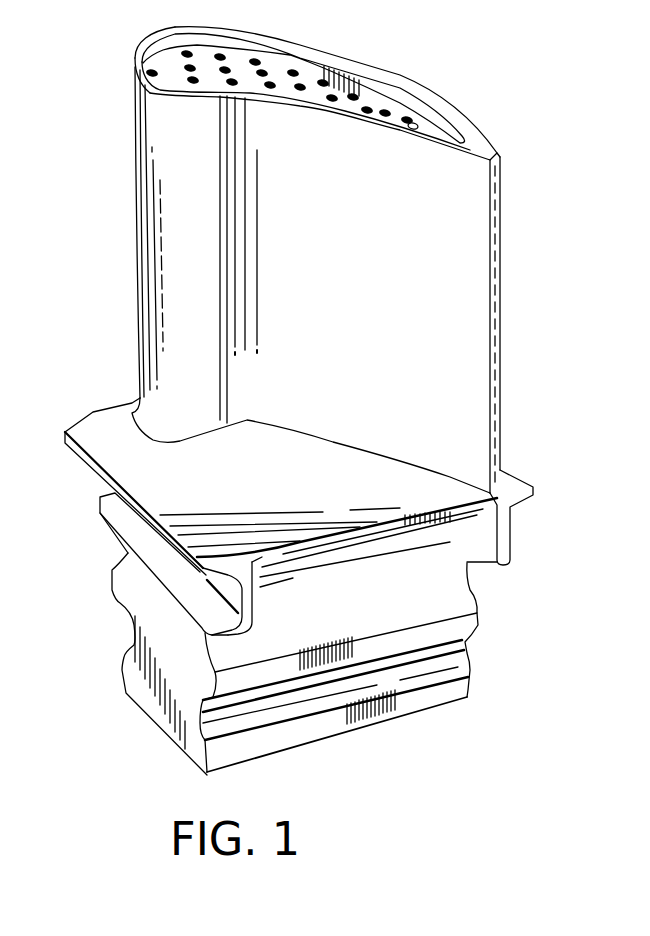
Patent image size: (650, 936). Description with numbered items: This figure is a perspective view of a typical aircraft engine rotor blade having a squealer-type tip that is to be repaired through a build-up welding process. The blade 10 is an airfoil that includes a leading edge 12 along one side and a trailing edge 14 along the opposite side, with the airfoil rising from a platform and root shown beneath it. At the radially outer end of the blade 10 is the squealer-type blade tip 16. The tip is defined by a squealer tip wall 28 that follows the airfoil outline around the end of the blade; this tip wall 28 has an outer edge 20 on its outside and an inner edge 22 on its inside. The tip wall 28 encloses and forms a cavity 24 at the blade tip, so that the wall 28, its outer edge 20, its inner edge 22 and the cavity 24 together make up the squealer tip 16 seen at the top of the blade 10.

The blade 10 is at (142, 342).
The leading edge 12 is at (137, 252).
The trailing edge 14 is at (502, 363).
The squealer-type blade tip 16 is at (135, 75).
The outer edge 20 is at (306, 113).
The inner edge 22 is at (397, 105).
The cavity 24 is at (307, 68).
The squealer tip wall 28 is at (155, 37).